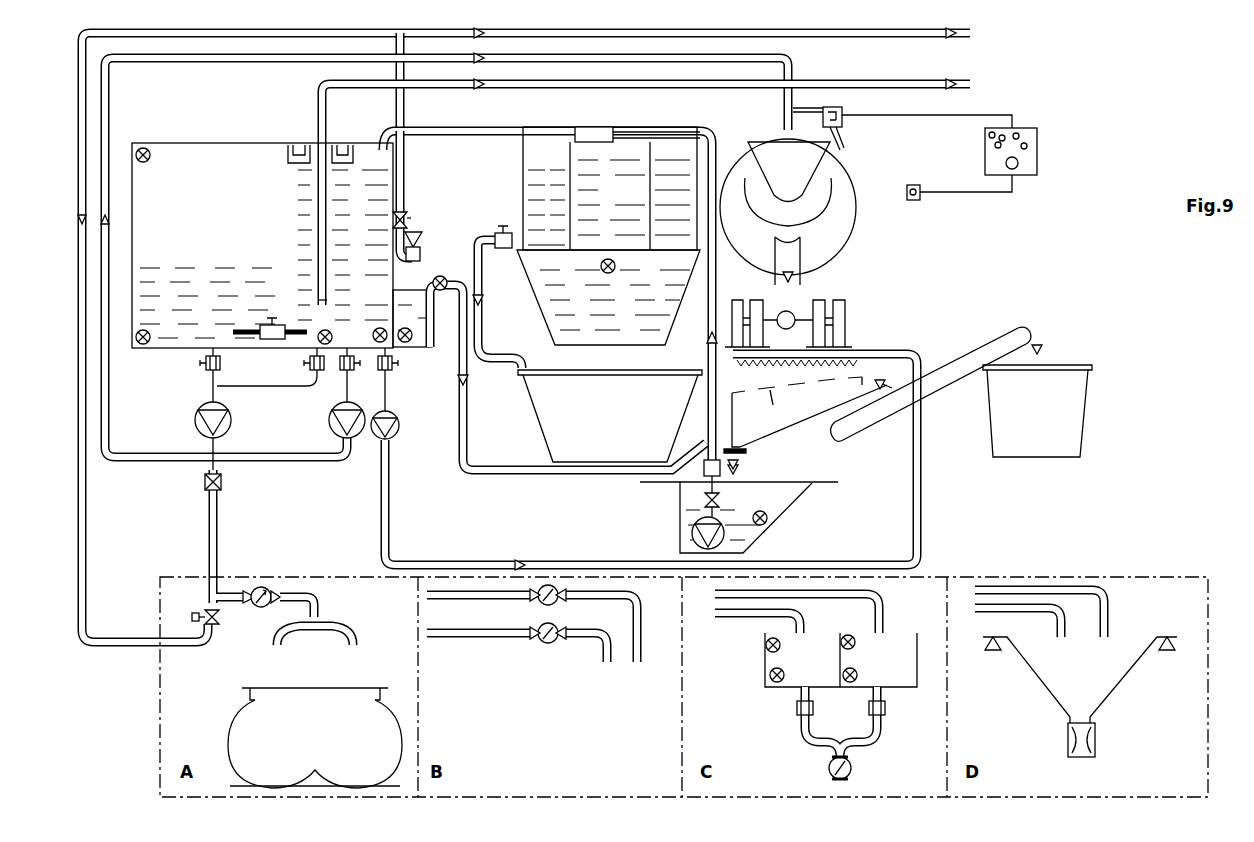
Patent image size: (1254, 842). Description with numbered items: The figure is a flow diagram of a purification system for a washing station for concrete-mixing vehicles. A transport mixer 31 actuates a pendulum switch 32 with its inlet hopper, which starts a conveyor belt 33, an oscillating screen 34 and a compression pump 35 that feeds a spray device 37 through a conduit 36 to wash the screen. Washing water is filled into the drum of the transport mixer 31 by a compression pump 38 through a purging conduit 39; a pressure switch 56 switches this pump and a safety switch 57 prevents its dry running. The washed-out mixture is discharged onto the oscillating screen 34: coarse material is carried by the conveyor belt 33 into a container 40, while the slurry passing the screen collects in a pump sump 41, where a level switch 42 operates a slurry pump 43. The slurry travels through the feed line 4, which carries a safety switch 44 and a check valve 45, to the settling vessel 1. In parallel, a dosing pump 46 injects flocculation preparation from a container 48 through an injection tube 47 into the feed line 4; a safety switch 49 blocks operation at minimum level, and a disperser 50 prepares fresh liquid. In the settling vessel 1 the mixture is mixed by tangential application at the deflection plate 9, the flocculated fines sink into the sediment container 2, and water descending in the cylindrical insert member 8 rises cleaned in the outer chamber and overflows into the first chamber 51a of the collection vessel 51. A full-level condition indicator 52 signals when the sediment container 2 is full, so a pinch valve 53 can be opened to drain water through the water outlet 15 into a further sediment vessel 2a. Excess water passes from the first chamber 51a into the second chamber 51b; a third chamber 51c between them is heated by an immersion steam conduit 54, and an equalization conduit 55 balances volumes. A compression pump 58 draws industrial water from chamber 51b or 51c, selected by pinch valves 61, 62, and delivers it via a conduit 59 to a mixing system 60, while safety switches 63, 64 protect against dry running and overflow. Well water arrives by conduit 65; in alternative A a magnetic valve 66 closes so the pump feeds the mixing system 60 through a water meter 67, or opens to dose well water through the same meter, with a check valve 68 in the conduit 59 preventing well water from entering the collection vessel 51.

The settling vessel 1 is at (613, 196).
The sediment container 2 is at (612, 316).
The further sediment vessel 2a is at (620, 432).
The feed line 4 is at (717, 140).
The cylindrical insert member 8 is at (568, 183).
The deflection plate 9 is at (596, 125).
The water outlet 15 is at (483, 325).
The transport mixer 31 is at (838, 245).
The pendulum switch 32 is at (842, 125).
The conveyor belt 33 is at (1028, 330).
The vibrating or oscillating screen 34 is at (770, 400).
The compression pump 35 is at (400, 430).
The conduit 36 is at (558, 562).
The spray device 37 is at (880, 346).
The compression pump 38 is at (360, 435).
The purging conduit 39 is at (792, 60).
The container 40 is at (1082, 410).
The pump sump 41 is at (800, 490).
The level switch 42 is at (766, 522).
The slurry pump 43 is at (692, 533).
The safety switch 44 is at (722, 480).
The check valve 45 is at (720, 503).
The dosing pump 46 is at (445, 276).
The injection tube 47 is at (490, 475).
The container 48 is at (405, 295).
The safety switch 49 is at (409, 340).
The disperser 50 is at (418, 242).
The collection vessel 51 is at (246, 128).
The first chamber 51a is at (366, 148).
The second chamber 51b is at (213, 152).
The third chamber 51c is at (316, 215).
The full-level condition indicator 52 is at (616, 266).
The pinch valve 53 is at (503, 248).
The immersion steam conduit 54 is at (975, 86).
The equalization conduit 55 is at (240, 330).
The pressure switch 56 is at (1040, 163).
The safety switch 57 is at (376, 330).
The compression pump 58 is at (195, 422).
The conduit 59 is at (218, 548).
The mixing system 60 is at (326, 742).
The pinch valve 61 is at (200, 365).
The pinch valve 62 is at (304, 366).
The safety switch 63 is at (130, 356).
The safety switch 64 is at (150, 158).
The conduit 65 is at (975, 36).
The magnetic valve 66 is at (204, 612).
The water meter 67 is at (264, 607).
The check valve 68 is at (203, 484).